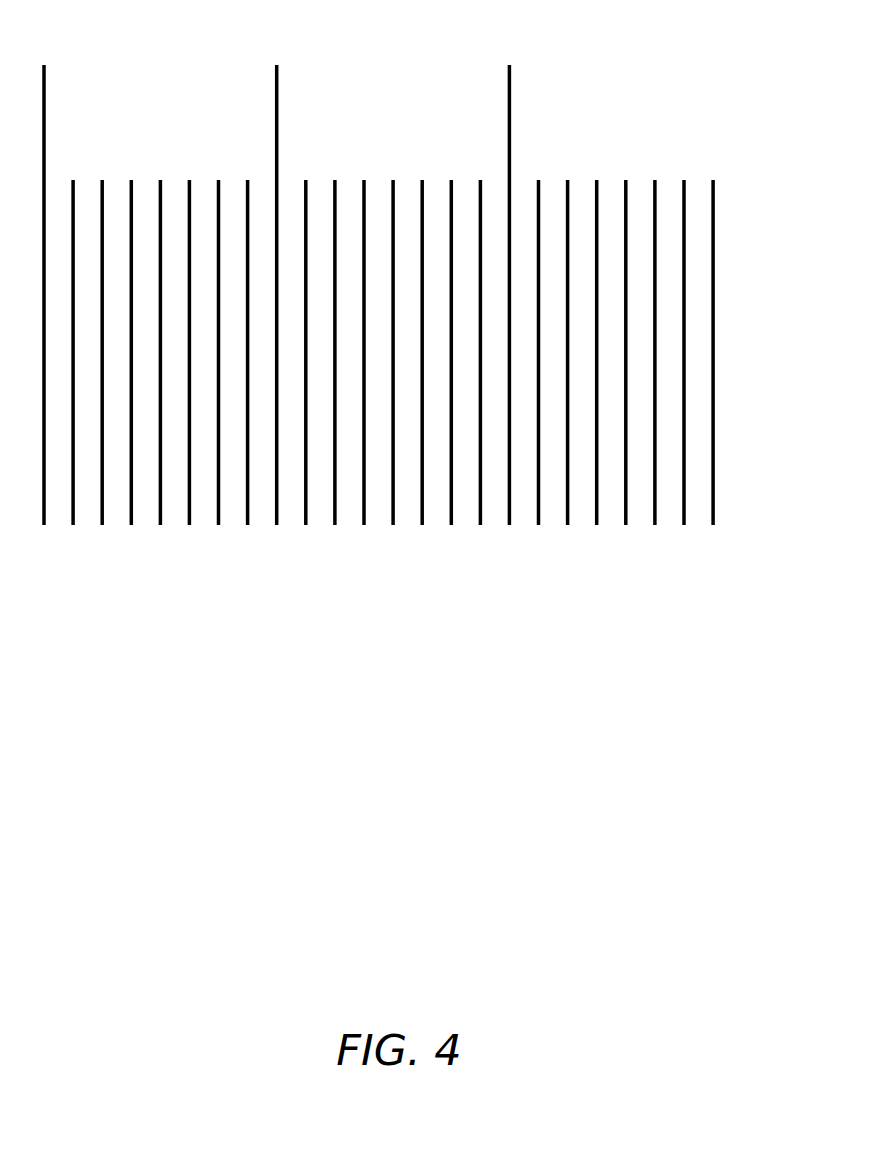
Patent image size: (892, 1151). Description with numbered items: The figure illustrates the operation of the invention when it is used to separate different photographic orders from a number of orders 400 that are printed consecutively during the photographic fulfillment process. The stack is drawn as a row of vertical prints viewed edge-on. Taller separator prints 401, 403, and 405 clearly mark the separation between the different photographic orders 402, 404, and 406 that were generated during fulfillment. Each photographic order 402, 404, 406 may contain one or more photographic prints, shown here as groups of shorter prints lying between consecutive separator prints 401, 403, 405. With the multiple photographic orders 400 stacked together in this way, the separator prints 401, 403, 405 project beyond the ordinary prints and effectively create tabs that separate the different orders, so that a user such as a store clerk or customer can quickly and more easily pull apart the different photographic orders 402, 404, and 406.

The number of orders 400 is at (840, 274).
The separator print 401 is at (48, 267).
The photographic order 402 is at (240, 559).
The separator print 403 is at (278, 267).
The photographic order 404 is at (318, 560).
The separator print 405 is at (500, 267).
The photographic order 406 is at (704, 560).